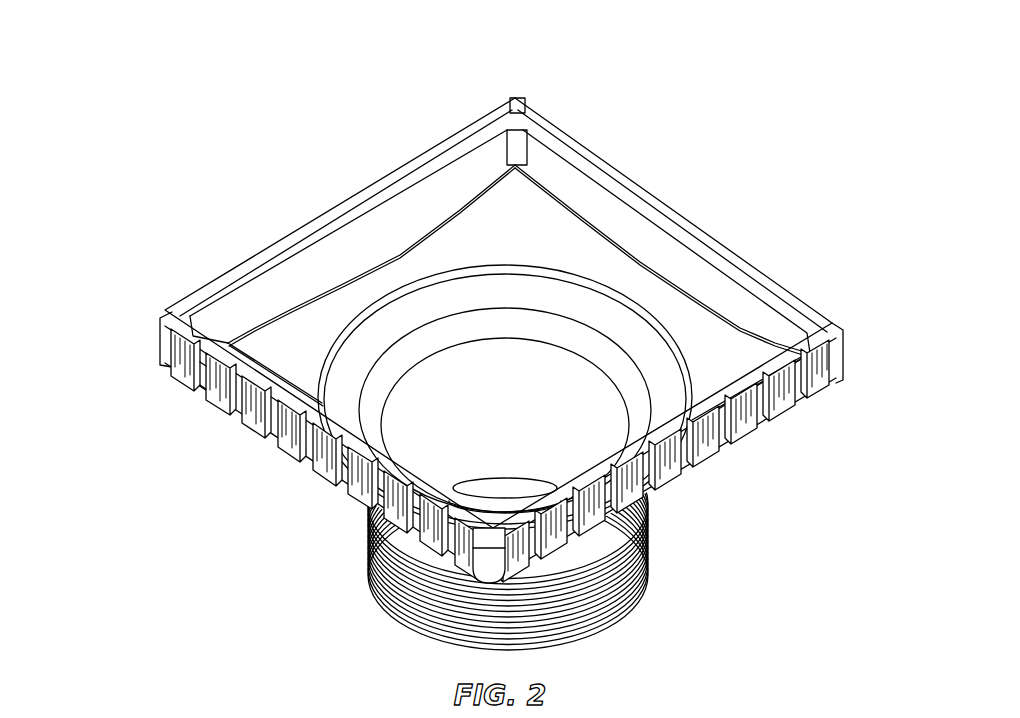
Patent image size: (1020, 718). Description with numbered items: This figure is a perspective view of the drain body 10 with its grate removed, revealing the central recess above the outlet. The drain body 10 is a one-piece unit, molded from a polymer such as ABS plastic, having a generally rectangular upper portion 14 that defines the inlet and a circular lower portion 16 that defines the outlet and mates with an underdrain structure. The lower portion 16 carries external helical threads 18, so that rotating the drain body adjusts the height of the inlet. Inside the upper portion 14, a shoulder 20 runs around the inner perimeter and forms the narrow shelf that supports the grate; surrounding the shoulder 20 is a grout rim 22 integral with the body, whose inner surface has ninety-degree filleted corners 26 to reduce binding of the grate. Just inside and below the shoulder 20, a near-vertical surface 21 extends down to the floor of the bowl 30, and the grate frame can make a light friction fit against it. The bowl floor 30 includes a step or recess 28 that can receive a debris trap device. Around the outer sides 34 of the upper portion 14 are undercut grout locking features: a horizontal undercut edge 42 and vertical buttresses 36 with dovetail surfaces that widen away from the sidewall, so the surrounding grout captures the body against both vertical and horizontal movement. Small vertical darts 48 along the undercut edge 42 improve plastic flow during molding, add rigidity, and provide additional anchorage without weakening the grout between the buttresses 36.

The drain body 10 is at (463, 355).
The upper portion 14 is at (463, 321).
The lower portion 16 is at (497, 540).
The external helical threads 18 is at (643, 578).
The shoulder 20 is at (563, 157).
The near-vertical surface 21 is at (437, 195).
The grout rim 22 is at (422, 152).
The filleted corners 26 is at (504, 100).
The step or recess 28 is at (363, 333).
The bowl floor 30 is at (722, 347).
The outer sides 34 is at (285, 446).
The vertical buttresses 36 is at (727, 452).
The horizontal undercut edge 42 is at (278, 418).
The vertical darts 48 is at (206, 384).